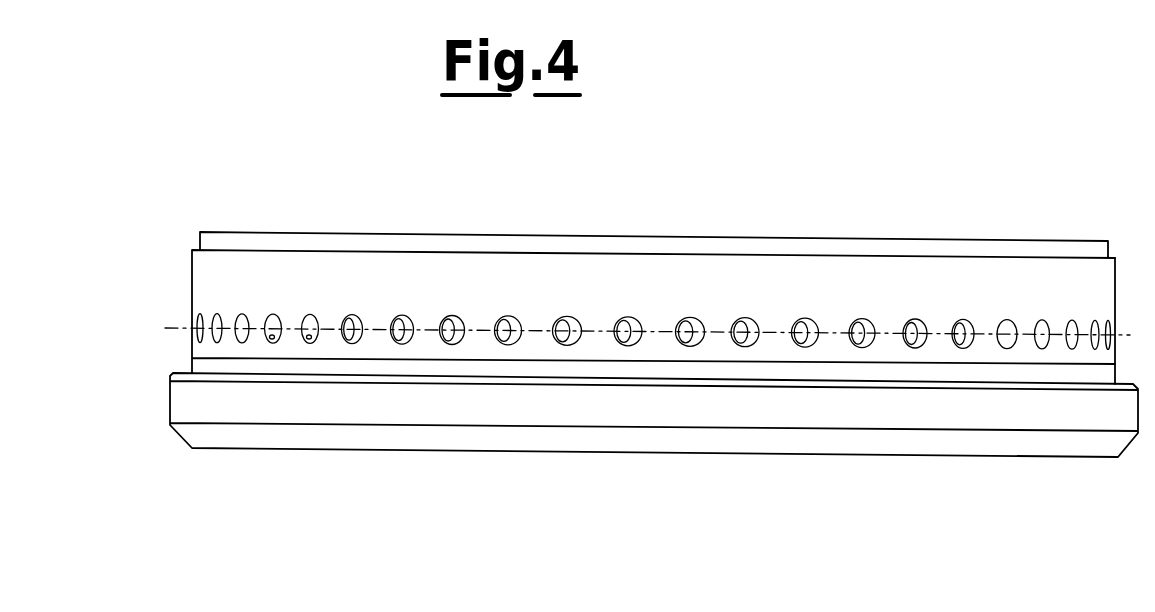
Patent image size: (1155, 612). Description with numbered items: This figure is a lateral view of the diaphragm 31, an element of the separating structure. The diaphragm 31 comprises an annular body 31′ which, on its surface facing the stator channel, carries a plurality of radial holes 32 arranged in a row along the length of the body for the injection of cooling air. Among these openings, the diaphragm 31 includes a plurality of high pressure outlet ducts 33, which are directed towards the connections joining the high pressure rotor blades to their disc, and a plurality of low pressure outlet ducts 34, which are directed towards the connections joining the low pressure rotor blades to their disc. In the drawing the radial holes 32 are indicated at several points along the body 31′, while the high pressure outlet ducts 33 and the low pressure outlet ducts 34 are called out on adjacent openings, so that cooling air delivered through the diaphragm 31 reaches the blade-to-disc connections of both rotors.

The diaphragm 31 is at (708, 238).
The annular body 31′ is at (1050, 283).
The radial holes 32 is at (957, 327).
The high pressure outlet ducts 33 is at (312, 341).
The low pressure outlet ducts 34 is at (350, 318).